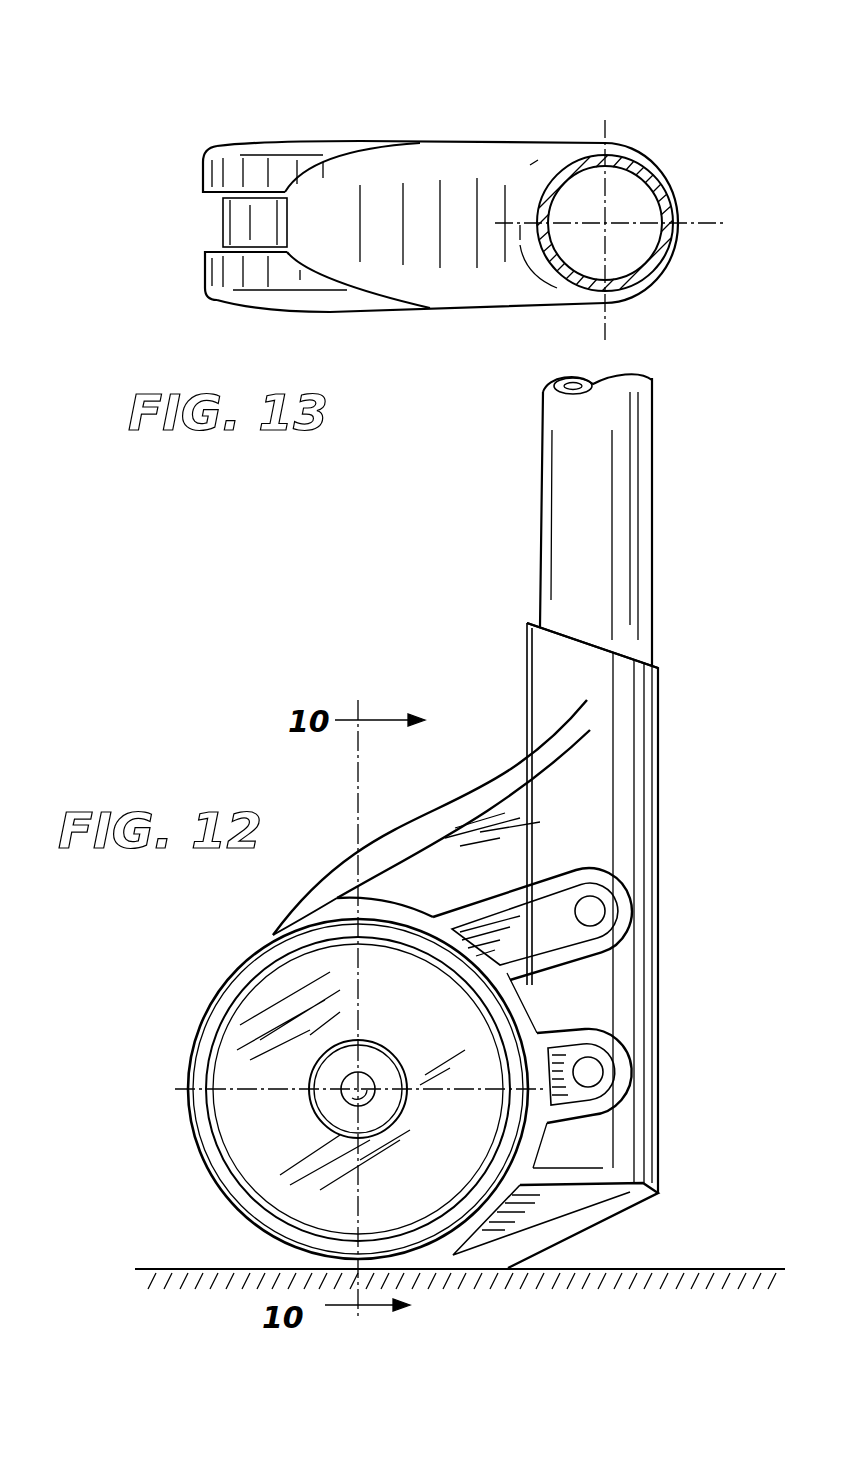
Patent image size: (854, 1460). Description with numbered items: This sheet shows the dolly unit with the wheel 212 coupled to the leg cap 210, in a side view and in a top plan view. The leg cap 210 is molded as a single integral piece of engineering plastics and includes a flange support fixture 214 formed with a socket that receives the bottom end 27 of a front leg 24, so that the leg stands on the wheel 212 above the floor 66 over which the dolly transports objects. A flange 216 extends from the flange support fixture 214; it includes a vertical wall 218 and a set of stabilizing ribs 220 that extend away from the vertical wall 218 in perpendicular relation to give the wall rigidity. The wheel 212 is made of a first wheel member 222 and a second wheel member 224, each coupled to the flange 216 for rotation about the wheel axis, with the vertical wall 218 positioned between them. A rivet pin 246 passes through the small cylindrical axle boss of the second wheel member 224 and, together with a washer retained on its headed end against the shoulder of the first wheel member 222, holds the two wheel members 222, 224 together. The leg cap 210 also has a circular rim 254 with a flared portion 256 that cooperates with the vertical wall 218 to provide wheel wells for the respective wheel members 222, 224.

In FIG. 12, the front leg 24 is at (533, 477).
In FIG. 12, the bottom end 27 is at (627, 647).
In FIG. 12, the floor 66 is at (696, 1272).
In FIG. 13, the leg cap 210 is at (540, 137).
In FIG. 12, the leg cap 210 is at (386, 667).
In FIG. 13, the wheel 212 is at (265, 137).
In FIG. 12, the wheel 212 is at (205, 1005).
In FIG. 13, the flange support fixture 214 is at (632, 162).
In FIG. 12, the flange support fixture 214 is at (547, 680).
In FIG. 12, the flange 216 is at (378, 835).
In FIG. 12, the vertical wall 218 is at (455, 858).
In FIG. 13, the stabilizing ribs 220 is at (450, 180).
In FIG. 12, the stabilizing ribs 220 is at (562, 875).
In FIG. 13, the first wheel member 222 is at (283, 170).
In FIG. 13, the second wheel member 224 is at (250, 292).
In FIG. 12, the rivet pin 246 is at (340, 1095).
In FIG. 13, the circular rim 254 is at (245, 218).
In FIG. 12, the flared portion 256 is at (405, 907).